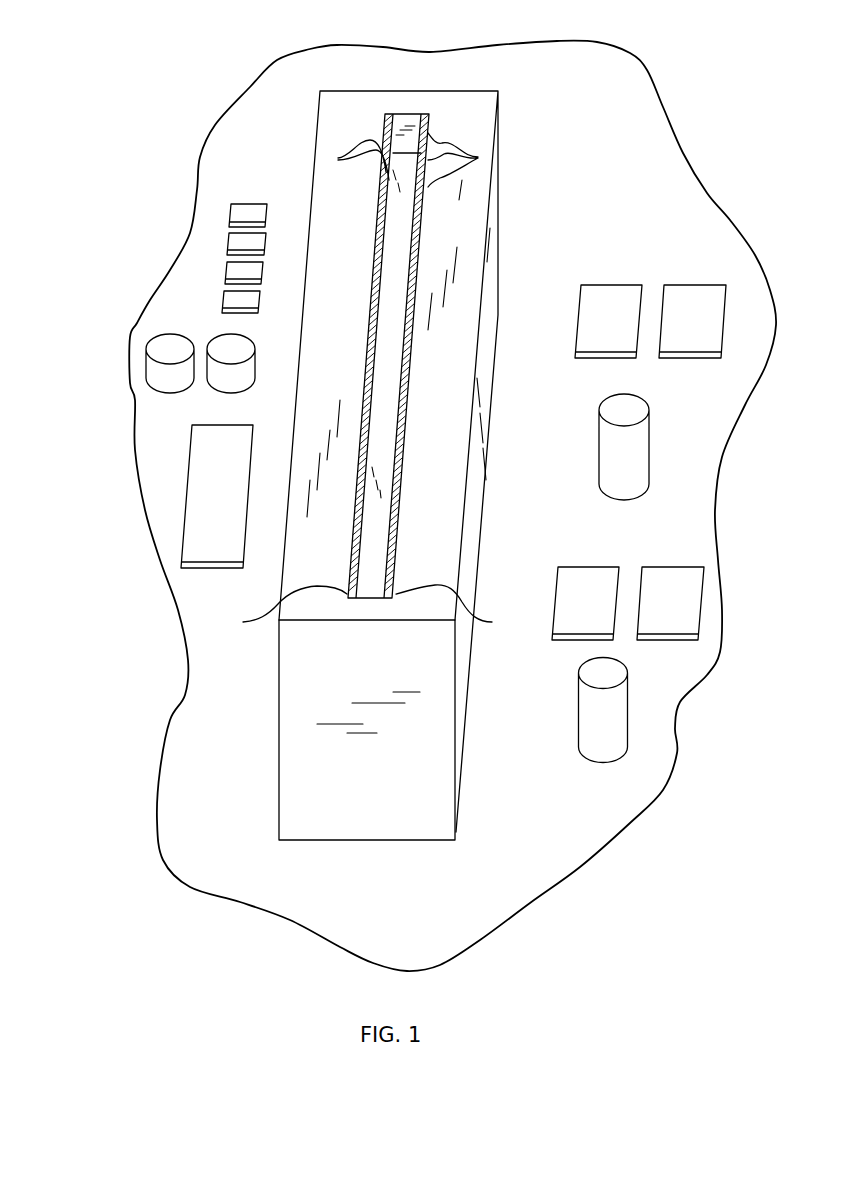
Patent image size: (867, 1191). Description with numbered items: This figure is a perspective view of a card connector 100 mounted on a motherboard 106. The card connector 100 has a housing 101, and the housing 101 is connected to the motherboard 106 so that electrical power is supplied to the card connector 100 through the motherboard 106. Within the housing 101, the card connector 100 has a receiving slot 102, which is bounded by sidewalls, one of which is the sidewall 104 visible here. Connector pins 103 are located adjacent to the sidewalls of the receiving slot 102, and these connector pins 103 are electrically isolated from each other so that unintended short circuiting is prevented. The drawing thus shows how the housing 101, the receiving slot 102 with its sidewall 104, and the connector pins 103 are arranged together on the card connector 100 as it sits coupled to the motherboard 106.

The card connector 100 is at (318, 110).
The housing 101 is at (422, 774).
The receiving slot 102 is at (395, 289).
The connector pins 103 is at (478, 157).
The sidewall 104 is at (365, 610).
The motherboard 106 is at (207, 806).